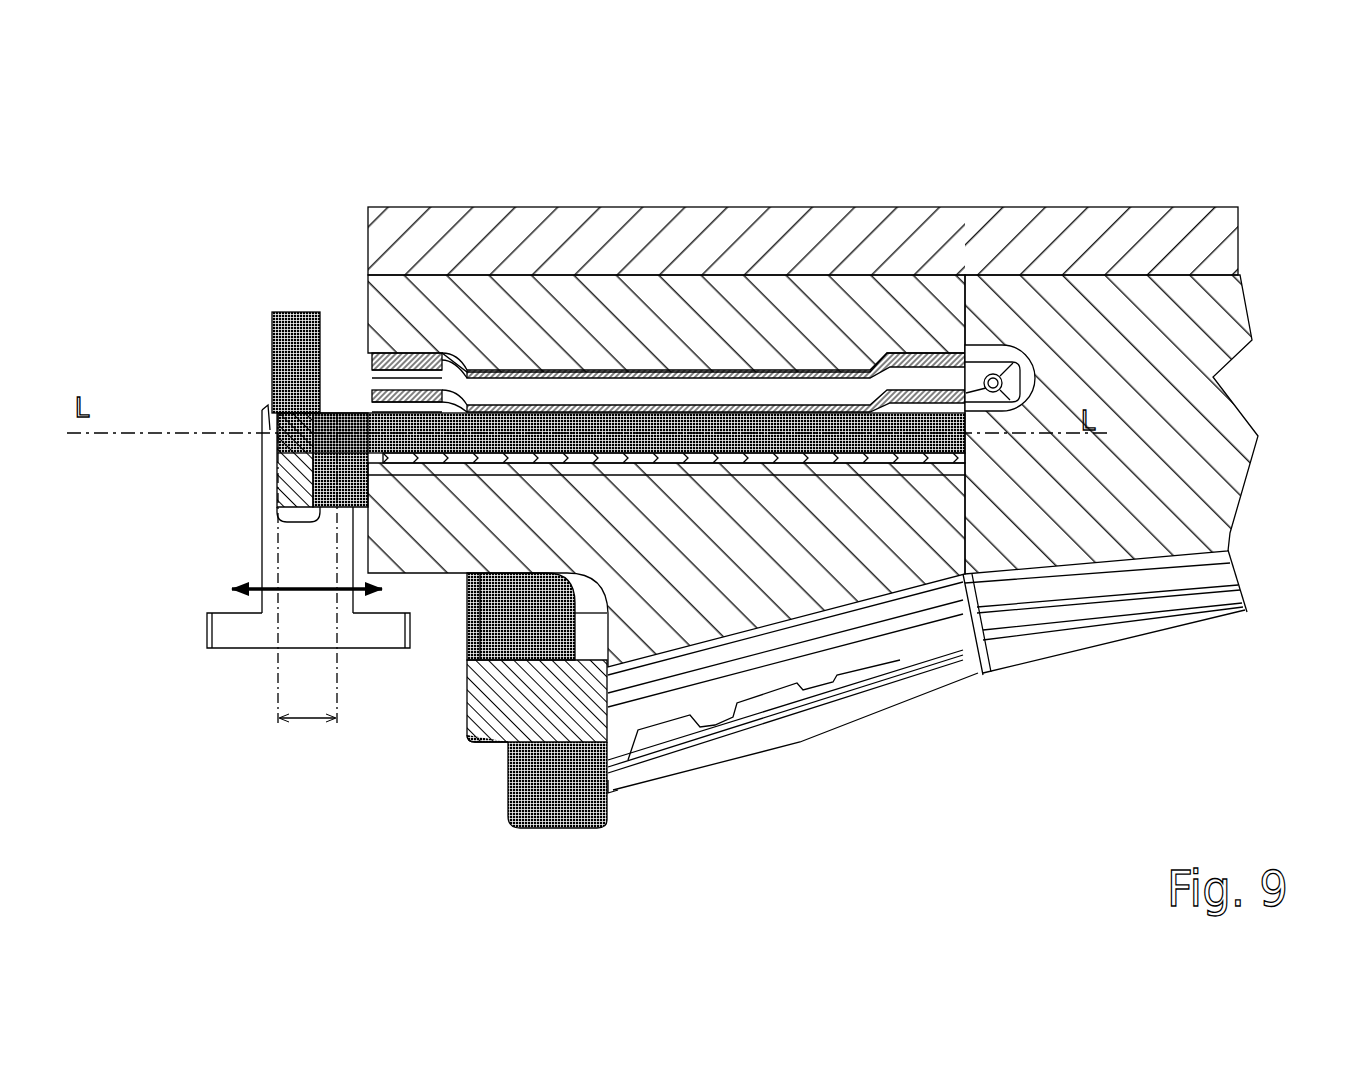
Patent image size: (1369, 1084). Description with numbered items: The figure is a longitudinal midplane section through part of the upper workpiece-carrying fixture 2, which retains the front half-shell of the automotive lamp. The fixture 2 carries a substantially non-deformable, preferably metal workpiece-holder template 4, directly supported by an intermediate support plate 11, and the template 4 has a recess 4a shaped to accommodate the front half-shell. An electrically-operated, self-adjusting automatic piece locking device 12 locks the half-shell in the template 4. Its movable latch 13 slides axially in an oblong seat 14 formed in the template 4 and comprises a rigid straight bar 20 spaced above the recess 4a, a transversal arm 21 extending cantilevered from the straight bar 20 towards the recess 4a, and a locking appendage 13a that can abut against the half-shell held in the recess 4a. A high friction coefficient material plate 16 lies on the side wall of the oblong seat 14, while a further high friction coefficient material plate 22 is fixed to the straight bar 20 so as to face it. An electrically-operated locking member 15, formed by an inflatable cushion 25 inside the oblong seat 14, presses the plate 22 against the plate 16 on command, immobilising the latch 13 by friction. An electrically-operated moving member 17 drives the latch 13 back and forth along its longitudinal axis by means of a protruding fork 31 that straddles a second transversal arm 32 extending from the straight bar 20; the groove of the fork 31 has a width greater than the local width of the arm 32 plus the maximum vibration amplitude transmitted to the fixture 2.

The workpiece-carrying fixture 2 is at (1242, 198).
The workpiece-holder template 4 is at (400, 312).
The recess 4a is at (788, 725).
The intermediate support plate 11 is at (1028, 215).
The automatic piece locking device 12 is at (258, 298).
The movable latch 13 is at (704, 405).
The locking appendage 13a is at (616, 786).
The oblong seat 14 is at (395, 455).
The electrically-operated locking member 15 is at (595, 366).
The high friction coefficient material plate 16 is at (457, 478).
The electrically-operated moving member 17 is at (205, 649).
The straight bar 20 is at (467, 418).
The transversal arm 21 is at (510, 682).
The high friction coefficient material plate 22 is at (527, 457).
The inflatable cushion 25 is at (657, 392).
The protruding fork 31 is at (270, 553).
The second transversal arm 32 is at (290, 465).